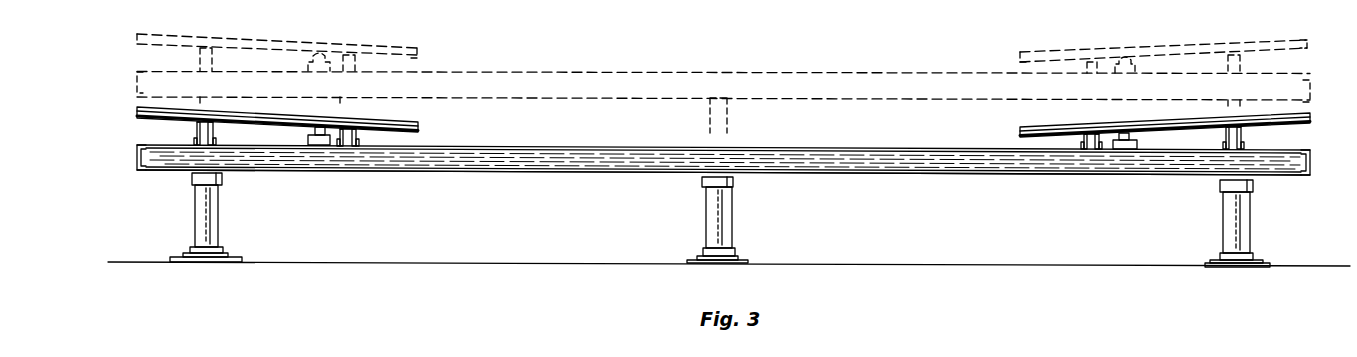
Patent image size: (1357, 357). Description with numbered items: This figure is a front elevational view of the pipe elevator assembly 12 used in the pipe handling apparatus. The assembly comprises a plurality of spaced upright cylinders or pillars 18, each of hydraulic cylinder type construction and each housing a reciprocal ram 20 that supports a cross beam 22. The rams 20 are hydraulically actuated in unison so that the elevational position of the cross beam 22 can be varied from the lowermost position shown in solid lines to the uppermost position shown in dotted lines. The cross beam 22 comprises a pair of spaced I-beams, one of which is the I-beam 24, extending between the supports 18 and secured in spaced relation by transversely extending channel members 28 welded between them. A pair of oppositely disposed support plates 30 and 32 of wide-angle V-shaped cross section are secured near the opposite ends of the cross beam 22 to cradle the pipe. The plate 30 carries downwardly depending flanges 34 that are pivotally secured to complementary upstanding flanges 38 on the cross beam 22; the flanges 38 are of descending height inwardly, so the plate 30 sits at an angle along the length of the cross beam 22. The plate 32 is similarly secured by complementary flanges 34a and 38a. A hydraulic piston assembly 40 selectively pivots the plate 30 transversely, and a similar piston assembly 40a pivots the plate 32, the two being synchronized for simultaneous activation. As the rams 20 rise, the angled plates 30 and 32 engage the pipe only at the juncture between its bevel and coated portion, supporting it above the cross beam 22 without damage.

The pipe elevator assembly 12 is at (700, 207).
The upright cylinder 18 is at (205, 229).
The reciprocal ram 20 is at (195, 175).
The cross beam 22 is at (542, 177).
The I-beam 24 is at (454, 165).
The channel member 28 is at (138, 160).
The support plate 30 is at (137, 108).
The support plate 32 is at (1020, 127).
The downwardly depending flange 34 is at (207, 121).
The downwardly depending flange 34a is at (1087, 130).
The upstanding flange 38 is at (197, 136).
The upstanding flange 38a is at (1242, 146).
The hydraulic piston assembly 40 is at (318, 123).
The hydraulic piston assembly 40a is at (1127, 128).